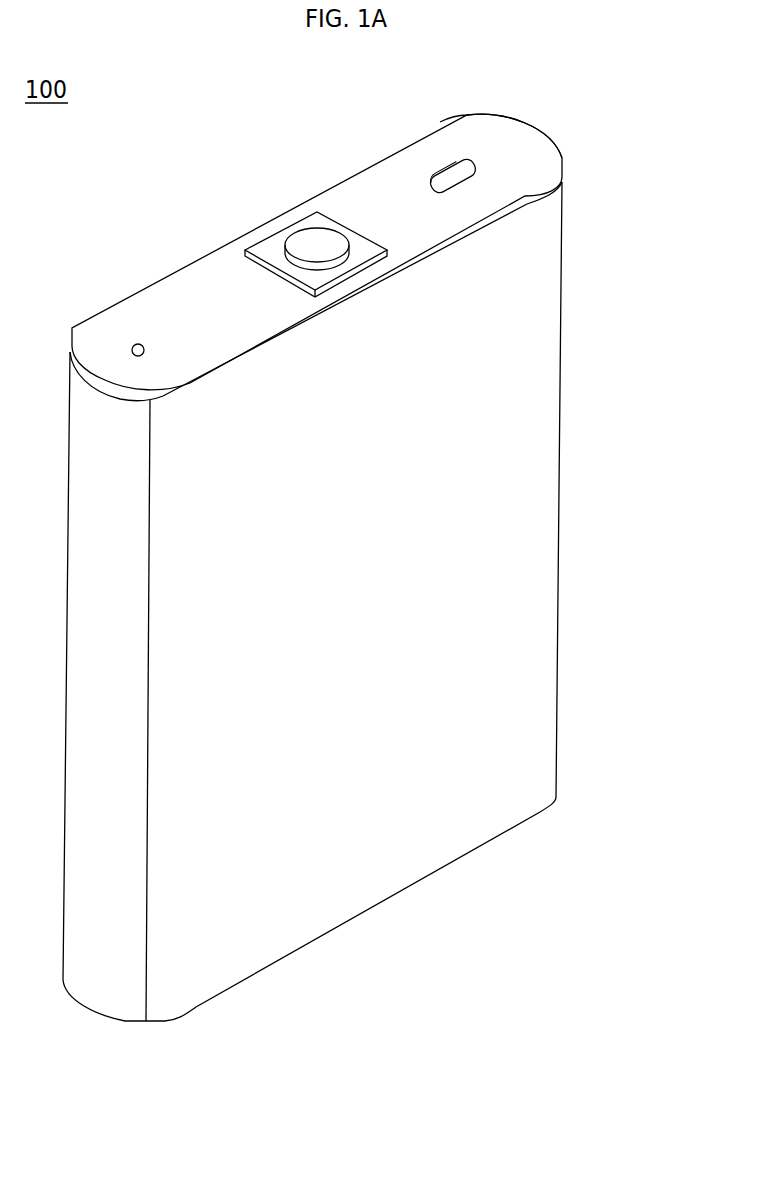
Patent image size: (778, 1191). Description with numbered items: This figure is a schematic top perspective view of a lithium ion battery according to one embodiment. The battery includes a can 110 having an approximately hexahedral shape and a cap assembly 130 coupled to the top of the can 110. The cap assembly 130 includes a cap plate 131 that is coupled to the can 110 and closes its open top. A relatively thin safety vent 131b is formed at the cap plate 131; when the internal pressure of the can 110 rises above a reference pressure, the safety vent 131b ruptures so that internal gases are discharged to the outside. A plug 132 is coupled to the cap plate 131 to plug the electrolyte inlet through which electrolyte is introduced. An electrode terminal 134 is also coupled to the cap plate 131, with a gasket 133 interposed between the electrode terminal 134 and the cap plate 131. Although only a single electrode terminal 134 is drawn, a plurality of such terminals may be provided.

The can 110 is at (563, 302).
The cap assembly 130 is at (168, 265).
The cap plate 131 is at (473, 114).
The safety vent 131b is at (439, 167).
The plug 132 is at (133, 342).
The gasket 133 is at (314, 212).
The electrode terminal 134 is at (290, 237).